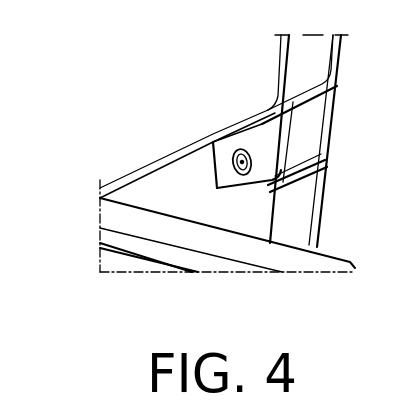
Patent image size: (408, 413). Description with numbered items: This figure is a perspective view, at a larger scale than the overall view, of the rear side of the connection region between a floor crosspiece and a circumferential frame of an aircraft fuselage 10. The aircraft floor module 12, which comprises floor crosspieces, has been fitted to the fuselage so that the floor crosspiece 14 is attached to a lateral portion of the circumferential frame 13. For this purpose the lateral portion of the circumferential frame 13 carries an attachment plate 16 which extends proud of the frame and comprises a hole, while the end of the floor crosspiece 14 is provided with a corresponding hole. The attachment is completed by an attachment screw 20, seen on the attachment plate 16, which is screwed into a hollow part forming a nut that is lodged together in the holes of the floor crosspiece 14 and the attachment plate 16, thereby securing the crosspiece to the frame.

The aircraft fuselage 10 is at (114, 112).
The aircraft floor module 12 is at (294, 241).
The circumferential frame 13 is at (303, 188).
The floor crosspiece 14 is at (148, 197).
The attachment plate 16 is at (258, 137).
The attachment screw 20 is at (233, 173).